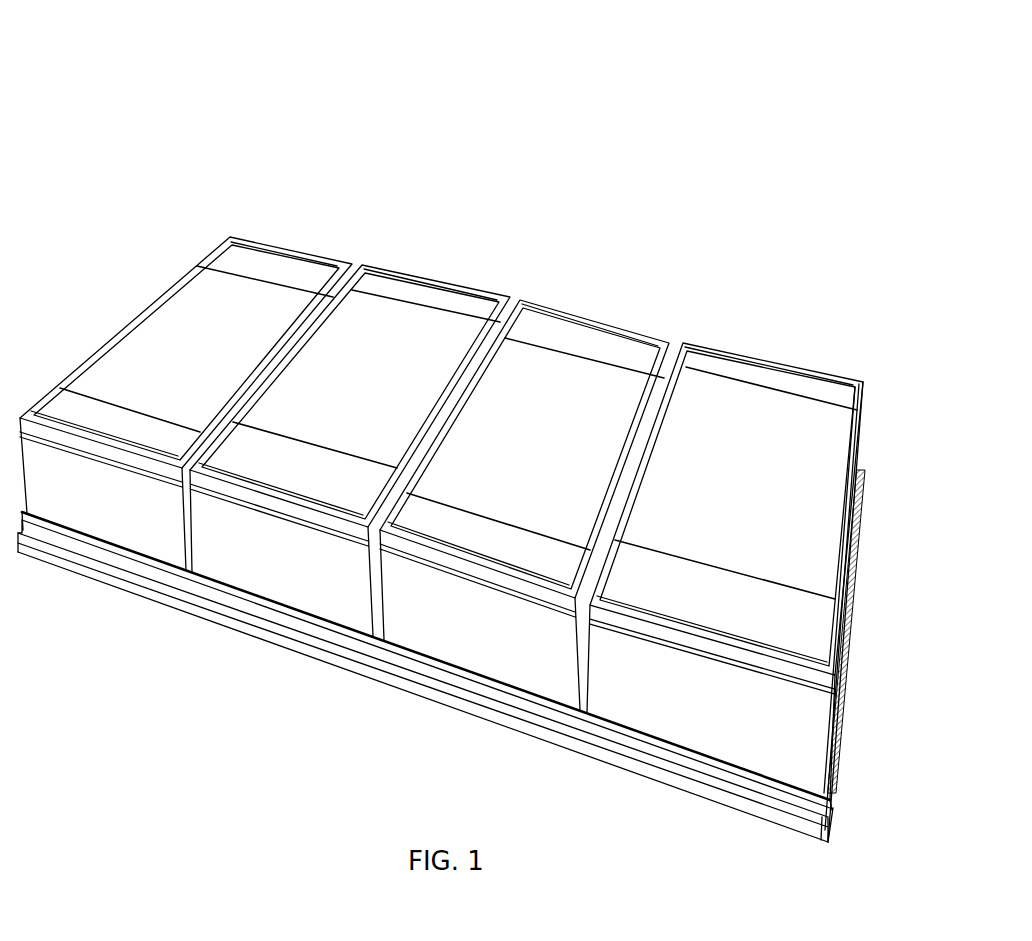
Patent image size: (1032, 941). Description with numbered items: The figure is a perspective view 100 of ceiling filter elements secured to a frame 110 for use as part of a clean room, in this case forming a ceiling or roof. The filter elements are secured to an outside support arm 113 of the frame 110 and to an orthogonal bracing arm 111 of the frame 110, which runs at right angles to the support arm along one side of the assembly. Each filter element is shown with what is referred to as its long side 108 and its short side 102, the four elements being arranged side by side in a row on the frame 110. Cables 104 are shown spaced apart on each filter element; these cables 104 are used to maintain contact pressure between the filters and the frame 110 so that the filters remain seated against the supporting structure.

The perspective view 100 is at (592, 226).
The short side 102 is at (442, 282).
The cables 104 is at (246, 272).
The long side 108 is at (130, 318).
The frame 110 is at (97, 570).
The orthogonal bracing arm 111 is at (863, 607).
The outside support arm 113 is at (358, 672).